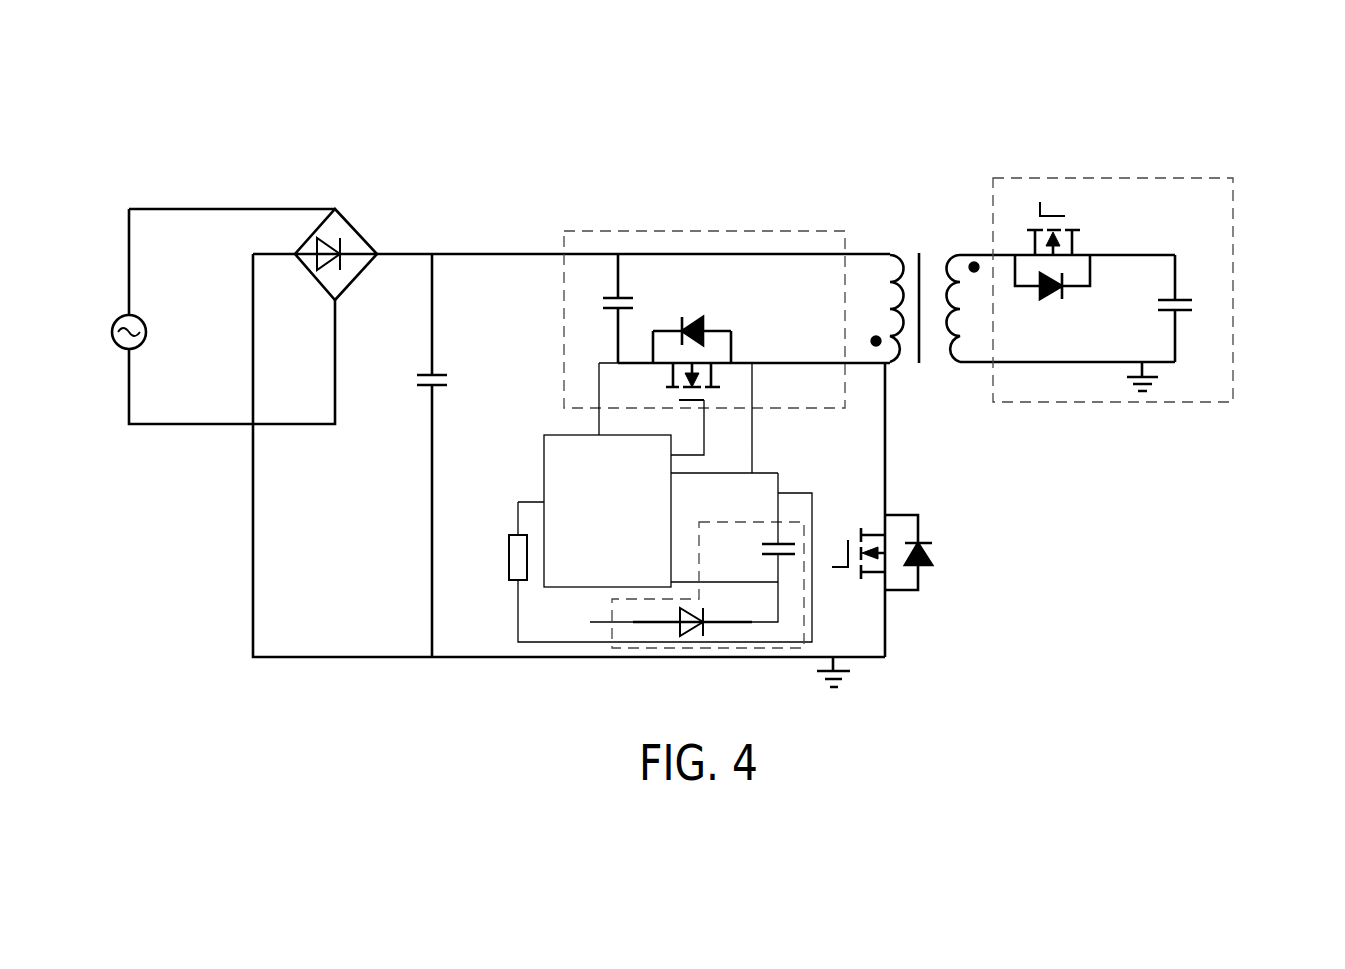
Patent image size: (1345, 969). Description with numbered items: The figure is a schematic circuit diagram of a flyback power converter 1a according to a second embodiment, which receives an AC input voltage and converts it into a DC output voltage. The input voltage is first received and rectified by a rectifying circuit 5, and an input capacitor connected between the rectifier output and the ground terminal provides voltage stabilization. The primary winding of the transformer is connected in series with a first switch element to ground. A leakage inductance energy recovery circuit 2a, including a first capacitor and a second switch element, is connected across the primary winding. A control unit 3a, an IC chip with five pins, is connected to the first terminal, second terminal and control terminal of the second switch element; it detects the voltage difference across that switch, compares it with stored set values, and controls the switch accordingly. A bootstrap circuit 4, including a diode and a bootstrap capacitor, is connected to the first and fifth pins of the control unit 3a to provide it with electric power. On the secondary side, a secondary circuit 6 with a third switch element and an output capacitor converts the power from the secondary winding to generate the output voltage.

The flyback power converter 1a is at (1328, 77).
The leakage inductance energy recovery circuit 2a is at (650, 232).
The control unit 3a is at (544, 460).
The bootstrap circuit 4 is at (804, 584).
The rectifying circuit 5 is at (357, 226).
The secondary circuit 6 is at (1205, 178).